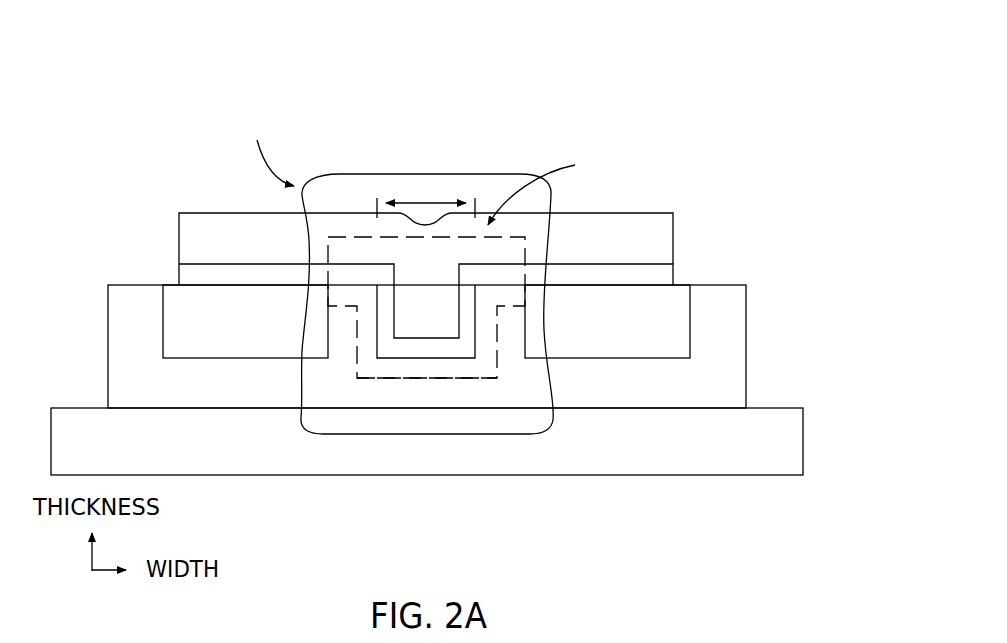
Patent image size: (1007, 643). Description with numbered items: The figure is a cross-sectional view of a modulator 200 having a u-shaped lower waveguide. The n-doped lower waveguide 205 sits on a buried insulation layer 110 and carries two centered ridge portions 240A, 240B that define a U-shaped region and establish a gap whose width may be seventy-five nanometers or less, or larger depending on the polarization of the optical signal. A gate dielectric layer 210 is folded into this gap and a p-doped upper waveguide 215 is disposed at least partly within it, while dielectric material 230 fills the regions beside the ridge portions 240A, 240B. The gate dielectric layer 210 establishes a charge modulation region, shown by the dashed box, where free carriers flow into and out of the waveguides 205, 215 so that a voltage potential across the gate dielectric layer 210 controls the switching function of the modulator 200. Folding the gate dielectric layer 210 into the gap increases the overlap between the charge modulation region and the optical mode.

The modulator 200 is at (660, 102).
The buried insulation layer 110 is at (767, 451).
The lower waveguide 205 is at (746, 338).
The gate dielectric layer 210 is at (673, 268).
The upper waveguide 215 is at (673, 218).
The dielectric material 230 is at (287, 330).
The ridge portion 240A is at (342, 342).
The ridge portion 240B is at (513, 342).